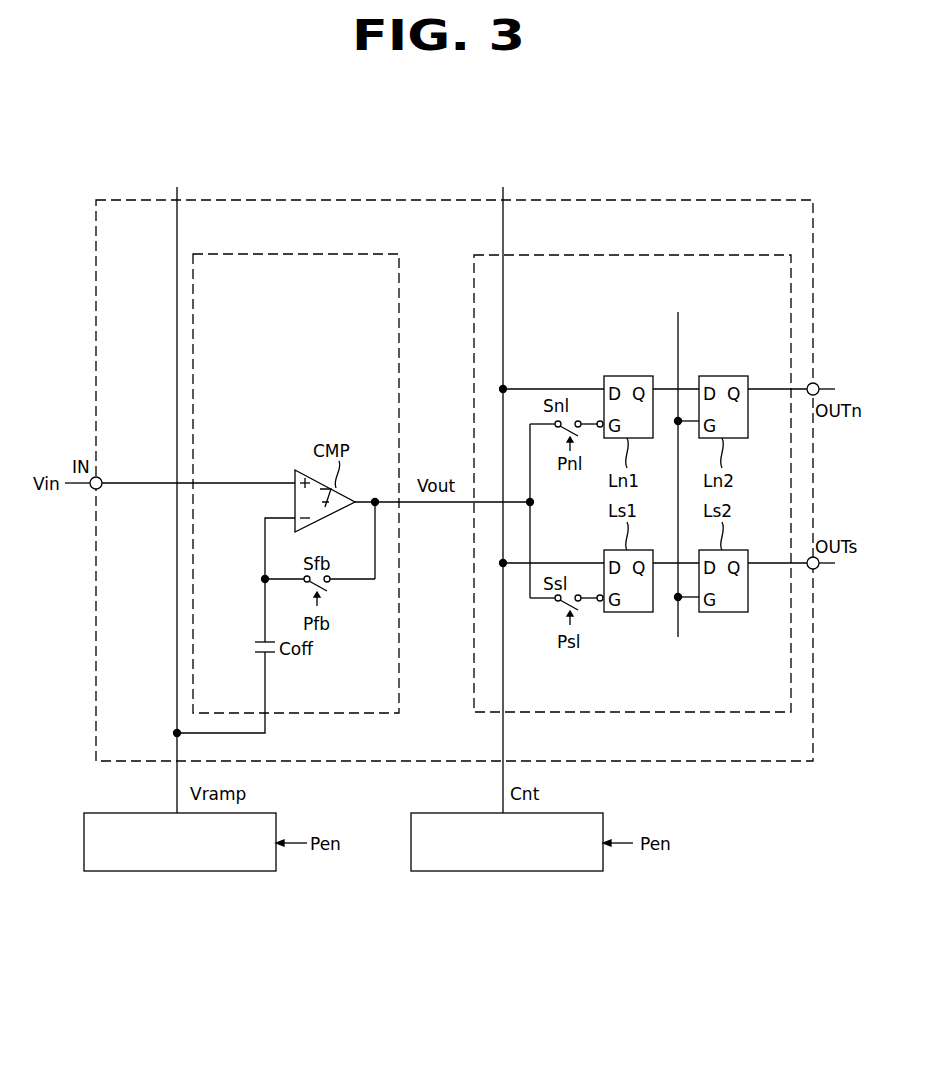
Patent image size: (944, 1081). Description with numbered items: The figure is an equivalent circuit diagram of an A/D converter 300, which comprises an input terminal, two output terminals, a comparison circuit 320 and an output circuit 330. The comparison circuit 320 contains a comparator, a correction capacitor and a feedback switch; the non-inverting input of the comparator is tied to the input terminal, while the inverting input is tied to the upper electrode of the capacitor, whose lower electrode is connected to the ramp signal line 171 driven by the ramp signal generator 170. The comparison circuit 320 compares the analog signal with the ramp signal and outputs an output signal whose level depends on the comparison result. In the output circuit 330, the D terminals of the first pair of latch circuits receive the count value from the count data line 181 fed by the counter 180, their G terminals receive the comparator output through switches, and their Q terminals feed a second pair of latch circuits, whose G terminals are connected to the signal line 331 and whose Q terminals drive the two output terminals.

The A/D converter 300 is at (290, 200).
The comparison circuit 320 is at (350, 255).
The output circuit 330 is at (580, 255).
The signal line 331 is at (680, 333).
The ramp signal generator 170 is at (205, 872).
The ramp signal line 171 is at (177, 782).
The counter 180 is at (553, 872).
The count data line 181 is at (503, 785).